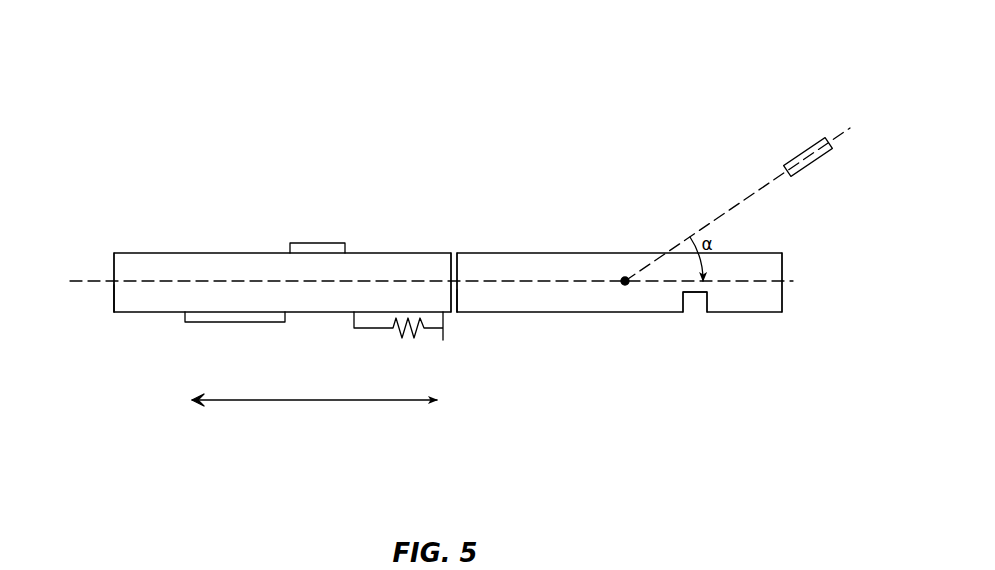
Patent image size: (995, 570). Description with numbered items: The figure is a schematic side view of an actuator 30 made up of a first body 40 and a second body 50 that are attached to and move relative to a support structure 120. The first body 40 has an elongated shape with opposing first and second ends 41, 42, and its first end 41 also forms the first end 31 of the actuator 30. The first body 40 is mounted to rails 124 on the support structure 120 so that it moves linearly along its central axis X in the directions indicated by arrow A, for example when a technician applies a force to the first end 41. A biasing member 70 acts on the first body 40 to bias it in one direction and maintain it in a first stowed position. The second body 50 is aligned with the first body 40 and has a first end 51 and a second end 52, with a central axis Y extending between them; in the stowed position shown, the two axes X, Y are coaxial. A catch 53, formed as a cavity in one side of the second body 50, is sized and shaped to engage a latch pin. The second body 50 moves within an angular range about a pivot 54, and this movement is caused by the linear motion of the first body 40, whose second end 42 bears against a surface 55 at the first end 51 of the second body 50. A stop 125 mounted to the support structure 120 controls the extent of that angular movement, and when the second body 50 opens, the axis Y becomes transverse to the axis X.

The actuator 30 is at (416, 128).
The first end of the actuator 31 is at (114, 270).
The first body 40 is at (248, 267).
The first end of the first body 41 is at (114, 295).
The second end of the first body 42 is at (450, 273).
The second body 50 is at (545, 265).
The first end of the second body 51 is at (459, 268).
The second end of the second body 52 is at (782, 272).
The catch 53 is at (695, 305).
The pivot 54 is at (625, 281).
The surface 55 is at (458, 293).
The biasing member 70 is at (418, 332).
The support structure 120 is at (528, 153).
The rails 124 is at (308, 245).
The stop 125 is at (808, 147).
The arrow A is at (316, 403).
The central axis of the first body X is at (165, 280).
The central axis of the second body Y is at (745, 280).